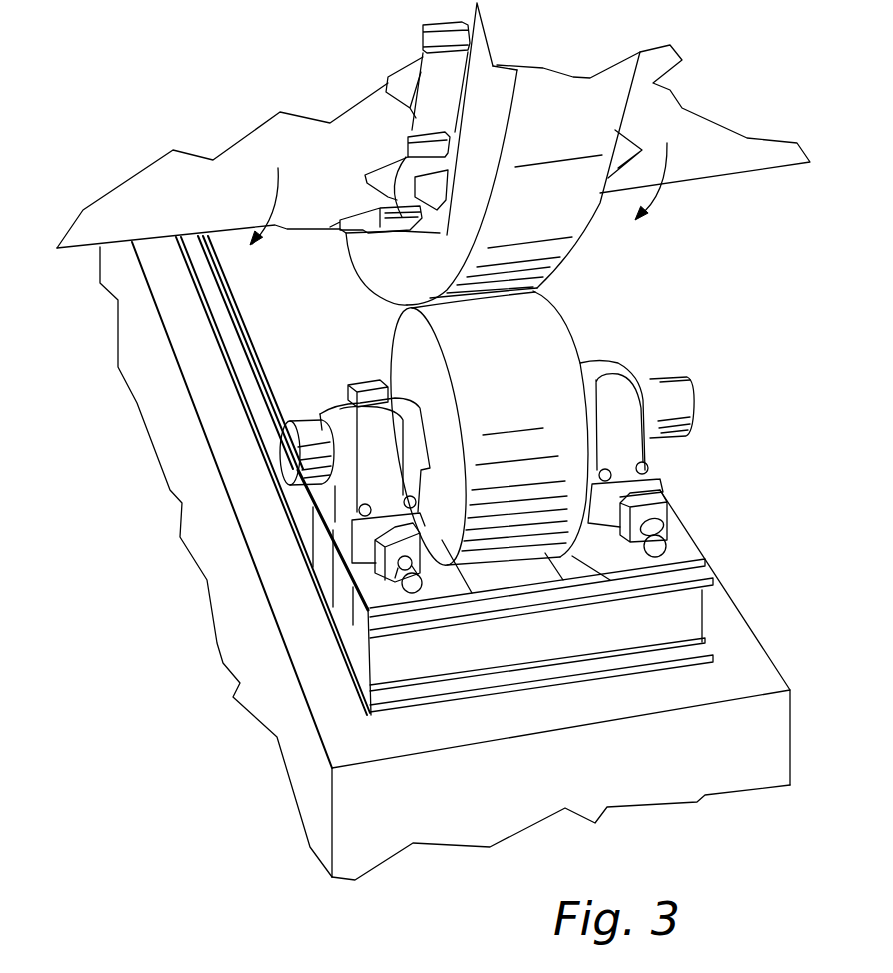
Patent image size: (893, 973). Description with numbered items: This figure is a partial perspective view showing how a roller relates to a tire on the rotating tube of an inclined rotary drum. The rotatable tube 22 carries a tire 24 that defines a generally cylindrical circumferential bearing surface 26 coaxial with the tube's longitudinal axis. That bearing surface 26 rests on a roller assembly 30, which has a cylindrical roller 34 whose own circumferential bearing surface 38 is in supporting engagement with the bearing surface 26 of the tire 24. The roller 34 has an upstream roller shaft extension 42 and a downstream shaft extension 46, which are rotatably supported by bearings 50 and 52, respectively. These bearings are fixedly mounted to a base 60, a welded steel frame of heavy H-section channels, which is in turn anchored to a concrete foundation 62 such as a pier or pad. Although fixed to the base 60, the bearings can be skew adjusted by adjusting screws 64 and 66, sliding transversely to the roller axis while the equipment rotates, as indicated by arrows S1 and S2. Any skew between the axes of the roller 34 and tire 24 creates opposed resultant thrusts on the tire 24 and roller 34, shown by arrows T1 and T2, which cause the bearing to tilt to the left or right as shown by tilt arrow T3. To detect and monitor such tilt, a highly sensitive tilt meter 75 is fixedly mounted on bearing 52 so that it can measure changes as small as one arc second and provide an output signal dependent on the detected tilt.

The rotatable tube 22 is at (713, 147).
The tire 24 is at (485, 88).
The circumferential bearing surface 26 is at (576, 141).
The roller assembly 30 is at (692, 350).
The cylindrical roller 34 is at (570, 328).
The circumferential bearing surface 38 is at (531, 402).
The upstream roller shaft extension 42 is at (676, 404).
The downstream shaft extension 46 is at (303, 447).
The bearing 50 is at (627, 450).
The bearing 52 is at (345, 492).
The base 60 is at (240, 350).
The foundation 62 is at (327, 696).
The adjusting screw 64 is at (667, 544).
The adjusting screw 66 is at (402, 584).
The tilt meter 75 is at (375, 388).
The thrust arrow T1 is at (510, 222).
The thrust arrow T2 is at (548, 305).
The tilt arrow T3 is at (402, 363).
The skew adjustment arrow S1 is at (700, 614).
The skew adjustment arrow S2 is at (480, 696).